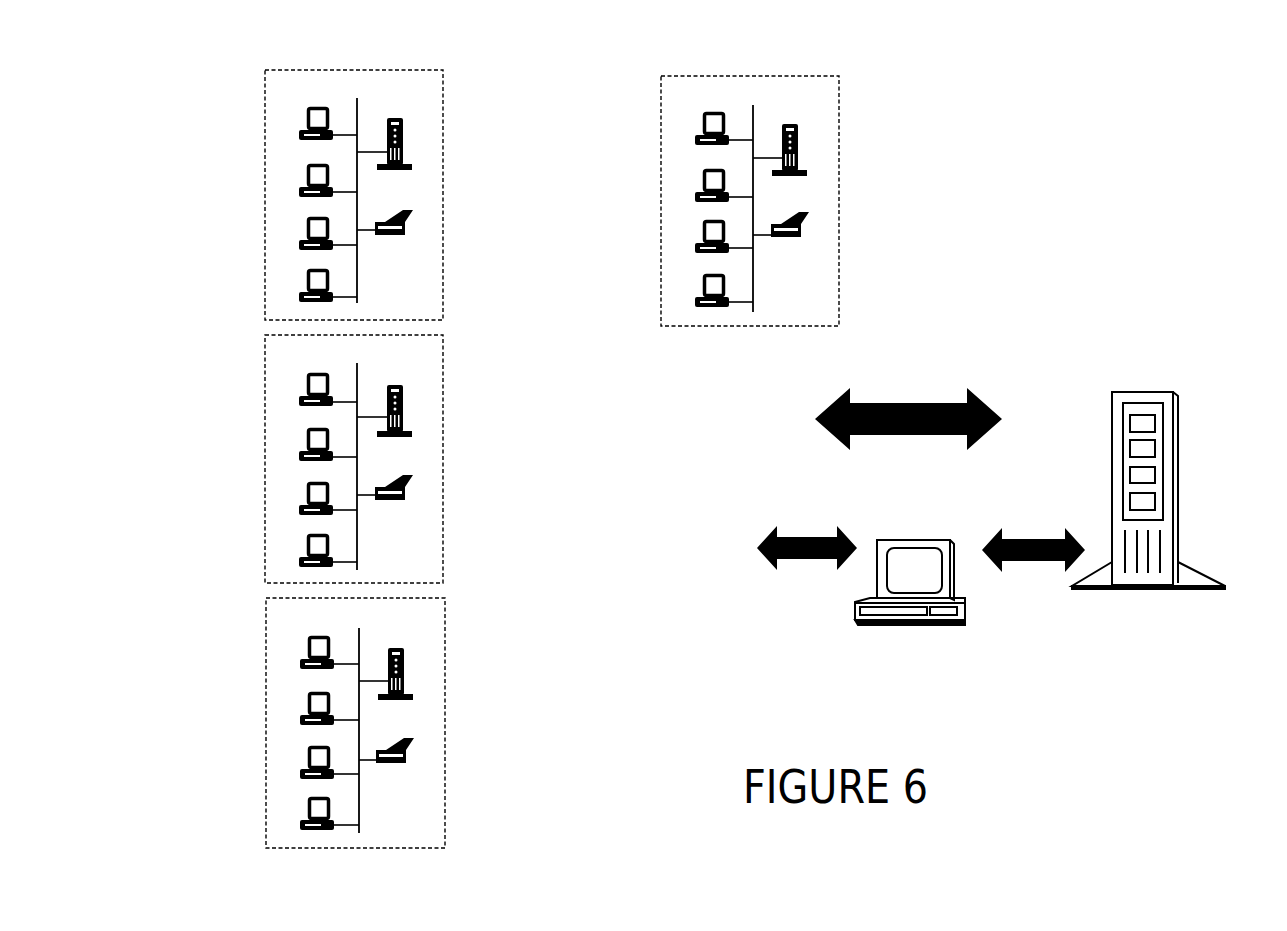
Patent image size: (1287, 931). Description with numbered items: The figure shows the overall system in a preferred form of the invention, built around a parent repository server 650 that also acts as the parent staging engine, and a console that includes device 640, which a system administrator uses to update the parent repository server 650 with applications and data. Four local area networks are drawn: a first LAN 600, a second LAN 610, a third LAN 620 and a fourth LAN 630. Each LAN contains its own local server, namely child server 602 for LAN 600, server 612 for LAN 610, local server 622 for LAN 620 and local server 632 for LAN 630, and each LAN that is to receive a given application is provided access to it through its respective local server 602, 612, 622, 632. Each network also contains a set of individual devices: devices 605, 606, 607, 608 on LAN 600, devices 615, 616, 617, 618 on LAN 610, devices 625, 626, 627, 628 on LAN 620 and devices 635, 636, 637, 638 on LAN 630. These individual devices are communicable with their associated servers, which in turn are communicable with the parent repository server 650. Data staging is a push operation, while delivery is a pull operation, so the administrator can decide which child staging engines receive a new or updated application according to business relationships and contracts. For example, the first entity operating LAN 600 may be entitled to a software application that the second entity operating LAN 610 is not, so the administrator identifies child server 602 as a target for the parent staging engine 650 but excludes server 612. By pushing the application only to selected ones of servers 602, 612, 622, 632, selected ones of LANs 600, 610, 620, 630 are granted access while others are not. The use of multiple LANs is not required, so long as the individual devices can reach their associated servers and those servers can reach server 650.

The LAN 600 is at (405, 187).
The child server 602 is at (446, 133).
The individual device 605 is at (257, 102).
The individual device 606 is at (257, 159).
The individual device 607 is at (257, 212).
The individual device 608 is at (257, 267).
The LAN 610 is at (403, 451).
The server 612 is at (446, 402).
The individual device 615 is at (257, 372).
The individual device 616 is at (257, 426).
The individual device 617 is at (257, 479).
The individual device 618 is at (257, 530).
The LAN 620 is at (405, 716).
The local server 622 is at (448, 664).
The individual device 625 is at (258, 633).
The individual device 626 is at (258, 689).
The individual device 627 is at (258, 742).
The individual device 628 is at (258, 795).
The LAN 630 is at (800, 195).
The local server 632 is at (846, 142).
The individual device 635 is at (653, 113).
The individual device 636 is at (653, 168).
The individual device 637 is at (653, 218).
The individual device 638 is at (653, 271).
The device 640 is at (952, 555).
The parent repository server 650 is at (1162, 463).